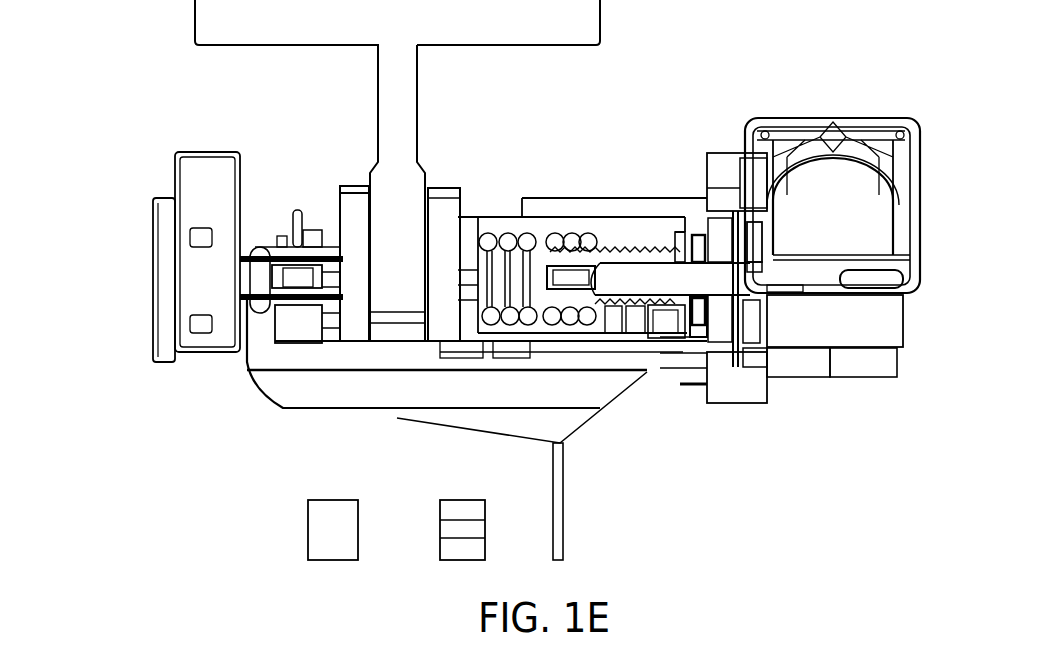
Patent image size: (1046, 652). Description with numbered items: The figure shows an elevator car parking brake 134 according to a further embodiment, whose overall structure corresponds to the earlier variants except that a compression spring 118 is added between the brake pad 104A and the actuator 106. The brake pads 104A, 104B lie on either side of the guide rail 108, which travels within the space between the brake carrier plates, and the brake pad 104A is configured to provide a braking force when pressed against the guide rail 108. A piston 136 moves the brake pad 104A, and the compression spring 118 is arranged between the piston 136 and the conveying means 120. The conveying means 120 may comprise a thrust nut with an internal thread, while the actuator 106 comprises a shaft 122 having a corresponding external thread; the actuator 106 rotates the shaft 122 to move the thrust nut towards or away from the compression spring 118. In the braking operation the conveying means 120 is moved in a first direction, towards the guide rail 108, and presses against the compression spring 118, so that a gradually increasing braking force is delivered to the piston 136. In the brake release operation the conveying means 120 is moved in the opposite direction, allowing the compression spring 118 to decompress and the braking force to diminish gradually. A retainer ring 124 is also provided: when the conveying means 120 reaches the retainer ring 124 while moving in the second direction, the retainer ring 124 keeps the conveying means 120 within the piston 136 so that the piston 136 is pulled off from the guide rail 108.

The elevator car parking brake 134 is at (168, 93).
The brake pad 104B is at (340, 202).
The guide rail 108 is at (426, 172).
The brake pad 104A is at (460, 200).
The piston 136 is at (463, 248).
The compression spring 118 is at (523, 238).
The conveying means 120 is at (610, 238).
The shaft 122 is at (653, 270).
The actuator 106 is at (892, 225).
The retainer ring 124 is at (640, 330).